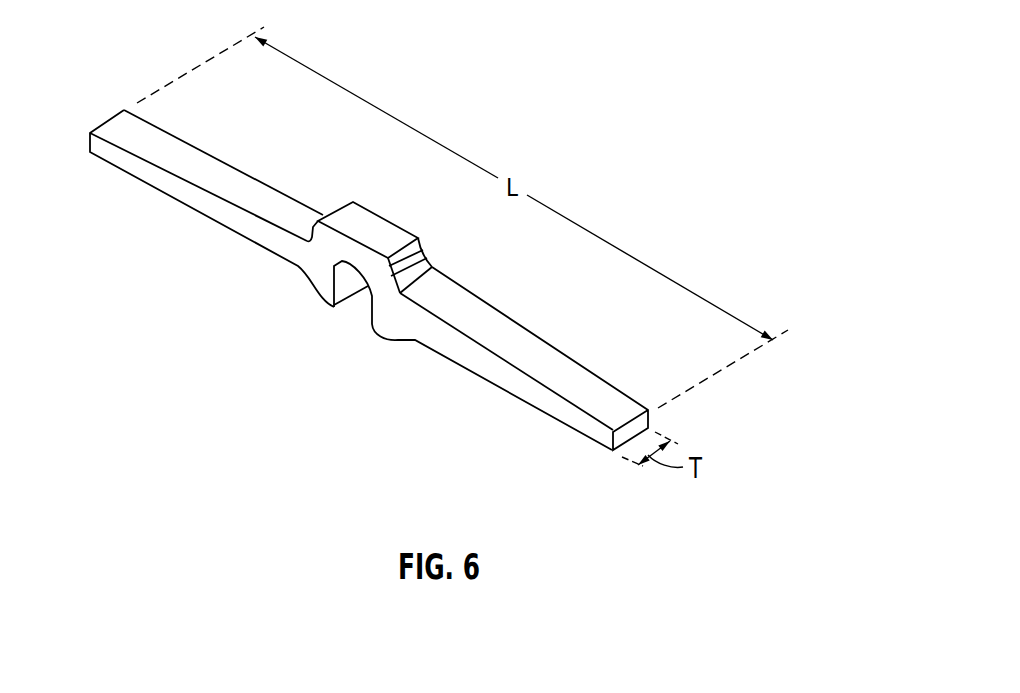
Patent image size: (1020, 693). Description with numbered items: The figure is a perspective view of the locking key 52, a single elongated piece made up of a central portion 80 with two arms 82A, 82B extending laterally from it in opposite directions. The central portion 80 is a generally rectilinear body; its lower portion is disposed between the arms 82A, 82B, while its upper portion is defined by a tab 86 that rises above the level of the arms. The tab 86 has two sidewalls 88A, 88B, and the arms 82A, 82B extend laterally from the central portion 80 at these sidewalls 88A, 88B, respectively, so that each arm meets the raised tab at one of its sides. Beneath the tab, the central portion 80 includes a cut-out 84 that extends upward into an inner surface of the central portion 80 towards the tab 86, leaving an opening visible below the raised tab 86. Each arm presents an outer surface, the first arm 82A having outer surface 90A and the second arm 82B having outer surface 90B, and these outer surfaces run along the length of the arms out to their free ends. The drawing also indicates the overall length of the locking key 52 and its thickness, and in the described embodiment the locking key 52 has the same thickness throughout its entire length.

The locking key 52 is at (369, 322).
The central portion 80 is at (313, 272).
The arm 82A is at (243, 228).
The arm 82B is at (483, 372).
The cut-out 84 is at (341, 298).
The tab 86 is at (386, 236).
The sidewall 88A is at (342, 203).
The sidewall 88B is at (406, 260).
The outer surface 90A is at (238, 181).
The outer surface 90B is at (529, 352).